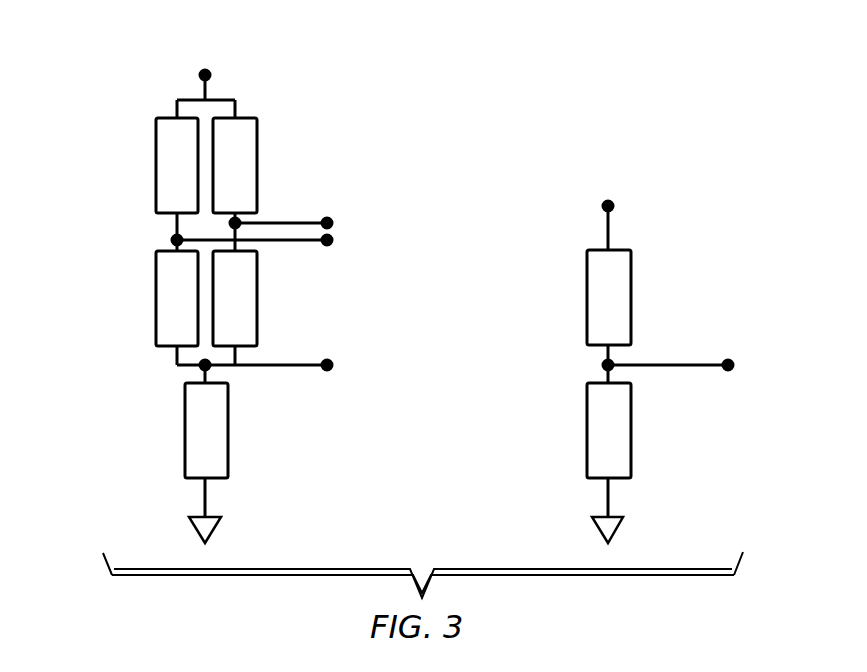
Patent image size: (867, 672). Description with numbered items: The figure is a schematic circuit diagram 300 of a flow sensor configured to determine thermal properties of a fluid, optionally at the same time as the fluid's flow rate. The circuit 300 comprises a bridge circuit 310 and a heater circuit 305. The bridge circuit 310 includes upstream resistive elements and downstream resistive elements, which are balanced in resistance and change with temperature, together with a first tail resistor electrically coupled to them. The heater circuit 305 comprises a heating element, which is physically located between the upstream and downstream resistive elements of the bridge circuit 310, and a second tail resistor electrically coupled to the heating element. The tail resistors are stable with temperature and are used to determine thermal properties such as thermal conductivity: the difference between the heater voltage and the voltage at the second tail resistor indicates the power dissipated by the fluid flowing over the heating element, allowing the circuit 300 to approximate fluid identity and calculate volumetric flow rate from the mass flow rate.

The circuit diagram 300 is at (128, 24).
The bridge circuit 310 is at (345, 82).
The heater circuit 305 is at (723, 223).